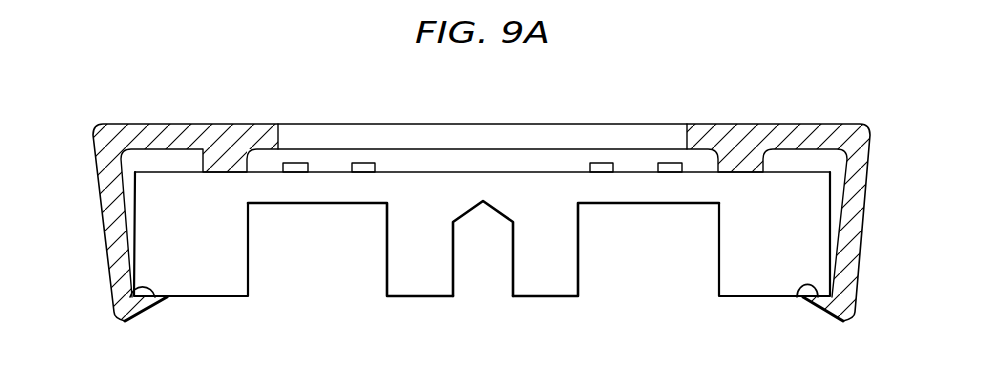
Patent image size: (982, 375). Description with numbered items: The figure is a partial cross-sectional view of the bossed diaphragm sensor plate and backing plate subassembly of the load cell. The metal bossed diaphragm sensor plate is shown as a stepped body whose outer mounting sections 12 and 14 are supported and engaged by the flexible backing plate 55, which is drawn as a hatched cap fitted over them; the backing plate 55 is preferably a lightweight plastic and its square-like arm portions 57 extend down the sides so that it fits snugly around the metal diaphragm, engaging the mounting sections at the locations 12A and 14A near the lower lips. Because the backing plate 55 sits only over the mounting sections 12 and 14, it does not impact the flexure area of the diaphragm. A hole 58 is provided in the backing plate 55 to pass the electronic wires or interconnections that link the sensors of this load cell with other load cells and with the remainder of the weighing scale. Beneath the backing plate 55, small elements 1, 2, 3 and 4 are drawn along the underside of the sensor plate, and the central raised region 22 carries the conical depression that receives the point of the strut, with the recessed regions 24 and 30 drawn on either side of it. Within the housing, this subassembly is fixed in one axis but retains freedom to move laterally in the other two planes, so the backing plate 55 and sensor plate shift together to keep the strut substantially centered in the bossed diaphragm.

The first contact pad 1 is at (295, 163).
The second contact pad 2 is at (362, 163).
The third contact pad 3 is at (602, 163).
The fourth contact pad 4 is at (670, 163).
The mounting section 12 is at (180, 247).
The mounting section engagement location 12A is at (128, 289).
The mounting section 14 is at (792, 230).
The mounting section engagement location 14A is at (800, 297).
The conical depression region 22 is at (478, 265).
The first recess 24 is at (341, 190).
The second recess 30 is at (645, 190).
The backing plate 55 is at (220, 143).
The arm portions 57 is at (110, 205).
The hole 58 is at (430, 135).